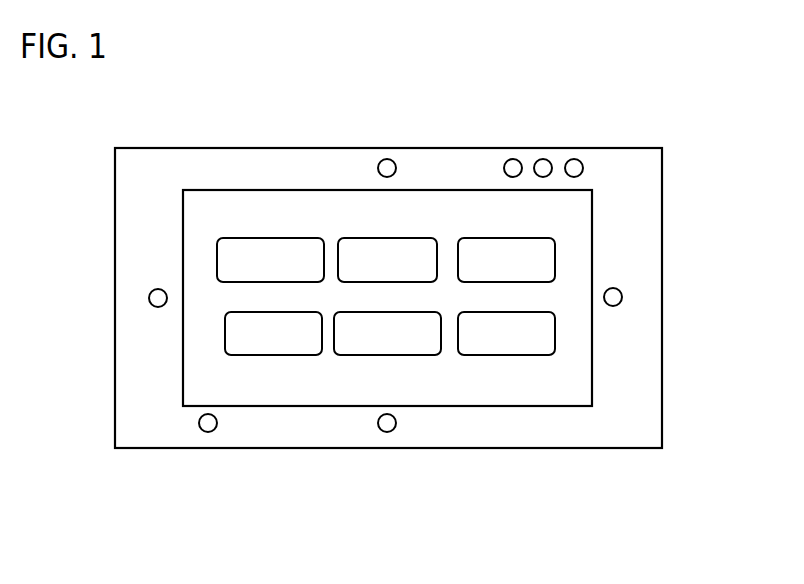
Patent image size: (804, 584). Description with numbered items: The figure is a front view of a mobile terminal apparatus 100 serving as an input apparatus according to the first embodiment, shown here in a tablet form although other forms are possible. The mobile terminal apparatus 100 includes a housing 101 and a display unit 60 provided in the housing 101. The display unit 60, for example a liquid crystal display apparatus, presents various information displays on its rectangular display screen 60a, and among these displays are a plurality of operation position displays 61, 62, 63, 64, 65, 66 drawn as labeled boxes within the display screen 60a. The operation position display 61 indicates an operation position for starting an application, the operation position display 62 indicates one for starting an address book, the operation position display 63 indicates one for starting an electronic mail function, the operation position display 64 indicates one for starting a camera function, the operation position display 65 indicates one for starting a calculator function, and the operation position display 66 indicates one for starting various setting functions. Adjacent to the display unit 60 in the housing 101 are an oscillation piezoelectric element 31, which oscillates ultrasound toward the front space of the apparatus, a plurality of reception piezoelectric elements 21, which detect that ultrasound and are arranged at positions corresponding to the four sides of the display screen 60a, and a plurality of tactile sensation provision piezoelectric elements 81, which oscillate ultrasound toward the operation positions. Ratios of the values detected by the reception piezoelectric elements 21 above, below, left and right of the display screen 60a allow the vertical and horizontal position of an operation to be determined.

The mobile terminal apparatus 100 is at (233, 58).
The housing 101 is at (662, 233).
The display unit 60 is at (593, 392).
The display screen 60a is at (557, 398).
The reception piezoelectric elements 21 is at (387, 159).
The tactile sensation provision piezoelectric elements 81 is at (574, 159).
The oscillation piezoelectric element 31 is at (205, 432).
The operation position display 61 is at (271, 238).
The operation position display 62 is at (417, 238).
The operation position display 63 is at (533, 238).
The operation position display 64 is at (272, 355).
The operation position display 65 is at (349, 355).
The operation position display 66 is at (490, 355).